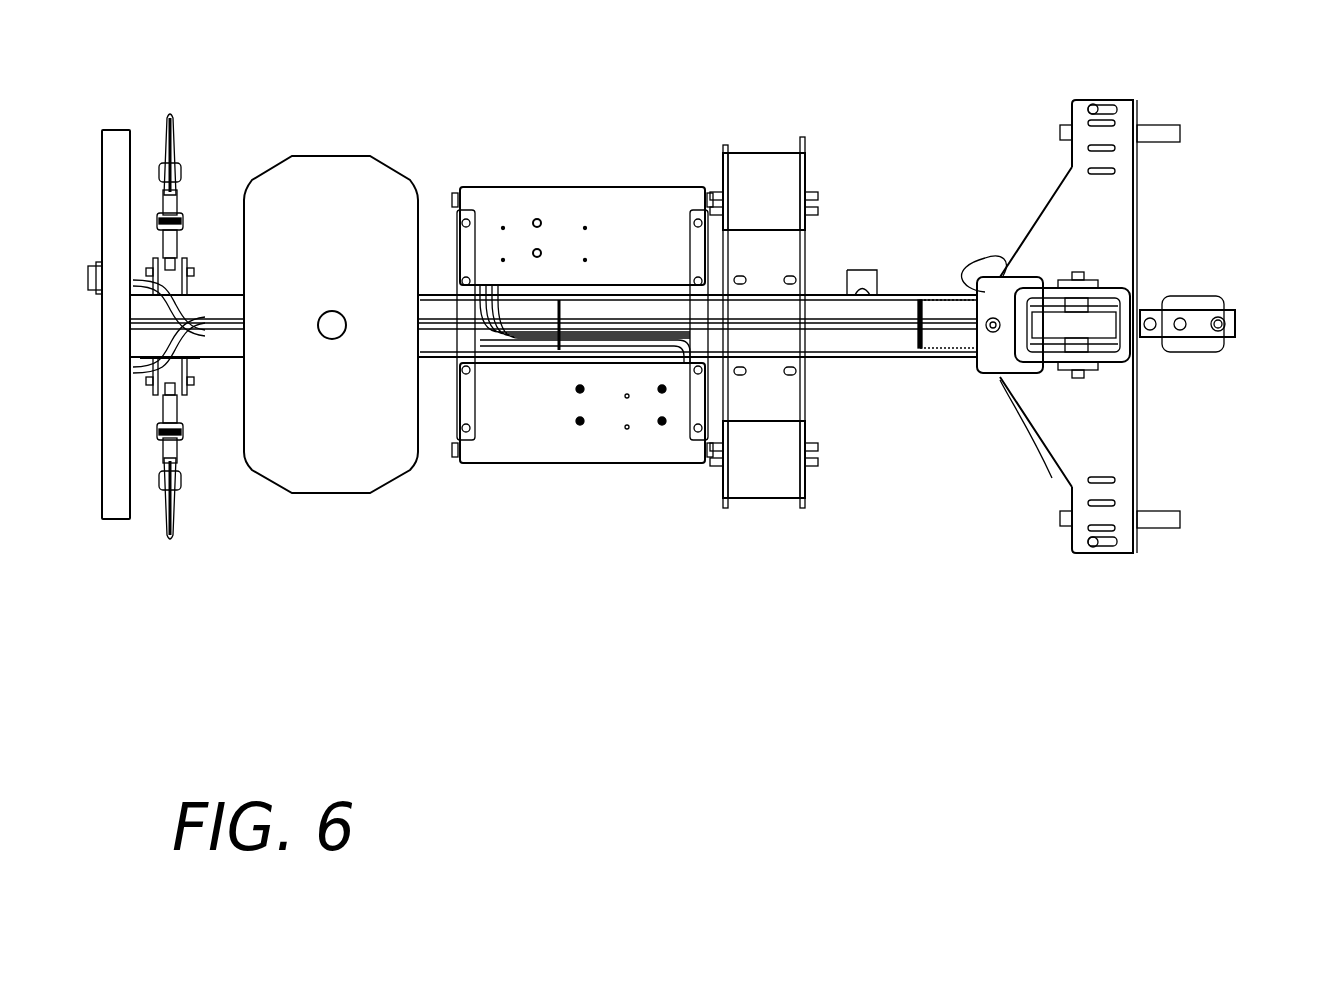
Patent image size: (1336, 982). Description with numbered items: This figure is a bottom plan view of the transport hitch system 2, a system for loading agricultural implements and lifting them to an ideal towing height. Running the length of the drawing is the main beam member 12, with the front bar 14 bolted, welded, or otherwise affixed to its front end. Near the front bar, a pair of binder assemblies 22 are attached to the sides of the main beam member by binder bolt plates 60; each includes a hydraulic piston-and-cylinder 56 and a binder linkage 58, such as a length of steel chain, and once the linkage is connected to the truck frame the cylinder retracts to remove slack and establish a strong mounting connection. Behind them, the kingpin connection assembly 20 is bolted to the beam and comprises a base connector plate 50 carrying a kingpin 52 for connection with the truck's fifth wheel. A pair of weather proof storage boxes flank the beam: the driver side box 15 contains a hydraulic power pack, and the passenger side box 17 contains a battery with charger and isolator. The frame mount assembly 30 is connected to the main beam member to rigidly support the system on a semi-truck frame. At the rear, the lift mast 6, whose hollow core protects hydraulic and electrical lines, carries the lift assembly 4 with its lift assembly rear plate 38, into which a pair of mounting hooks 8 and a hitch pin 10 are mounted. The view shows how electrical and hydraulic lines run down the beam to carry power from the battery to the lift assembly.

The transport hitch system 2 is at (470, 578).
The lift assembly 4 is at (1224, 443).
The lift mast 6 is at (1090, 292).
The mounting hooks 8 is at (1182, 133).
The hitch pin 10 is at (1237, 323).
The main beam member 12 is at (907, 360).
The front bar 14 is at (116, 130).
The driver side box 15 is at (652, 228).
The passenger side box 17 is at (550, 445).
The kingpin connection assembly 20 is at (331, 381).
The binder assemblies 22 is at (156, 112).
The frame mount assembly 30 is at (820, 358).
The lift assembly rear plate 38 is at (1138, 199).
The base connector plate 50 is at (340, 442).
The kingpin 52 is at (348, 326).
The hydraulic piston-and-cylinder 56 is at (180, 243).
The binder linkage 58 is at (180, 172).
The binder bolt plate 60 is at (186, 292).